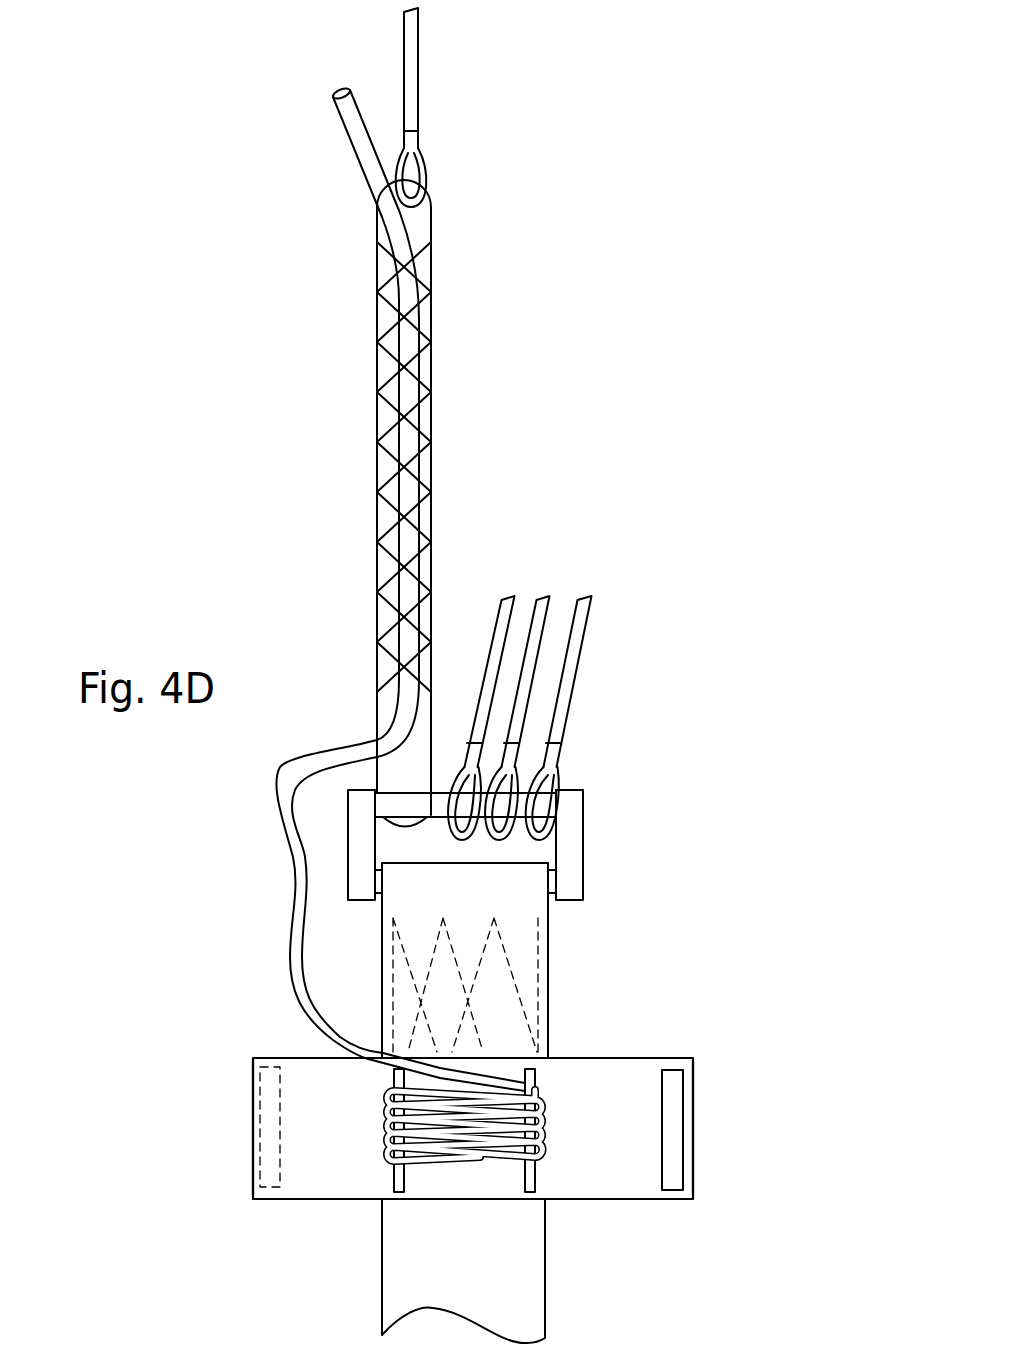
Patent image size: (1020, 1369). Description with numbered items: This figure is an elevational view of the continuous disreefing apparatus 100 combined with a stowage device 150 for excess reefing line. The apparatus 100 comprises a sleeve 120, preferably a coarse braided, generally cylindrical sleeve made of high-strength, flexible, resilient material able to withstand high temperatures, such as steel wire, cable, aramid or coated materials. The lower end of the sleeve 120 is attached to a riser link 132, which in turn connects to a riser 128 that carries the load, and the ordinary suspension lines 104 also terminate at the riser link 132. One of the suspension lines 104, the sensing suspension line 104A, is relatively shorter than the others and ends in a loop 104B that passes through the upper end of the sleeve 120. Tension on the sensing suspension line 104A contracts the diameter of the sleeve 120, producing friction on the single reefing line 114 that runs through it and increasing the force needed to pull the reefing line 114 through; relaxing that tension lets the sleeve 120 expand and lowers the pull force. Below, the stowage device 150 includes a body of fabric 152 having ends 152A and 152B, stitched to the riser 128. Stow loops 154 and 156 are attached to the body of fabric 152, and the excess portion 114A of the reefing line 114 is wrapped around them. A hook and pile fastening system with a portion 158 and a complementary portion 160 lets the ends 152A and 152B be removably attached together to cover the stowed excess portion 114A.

The continuous disreefing apparatus 100 is at (431, 413).
The suspension lines 104 is at (532, 421).
The sensing suspension line 104A is at (418, 92).
The loop 104B is at (427, 165).
The single reefing line 114 is at (350, 152).
The excess portion of reefing line 114A is at (473, 1141).
The sleeve 120 is at (377, 500).
The riser 128 is at (546, 965).
The riser link 132 is at (583, 827).
The stowage device 150 is at (457, 1126).
The body of fabric 152 is at (457, 1126).
The first end of body of fabric 152A is at (253, 1172).
The second end of body of fabric 152B is at (695, 1155).
The stow loop 154 is at (400, 1175).
The stow loop 156 is at (530, 1173).
The hook and pile fastener portion 158 is at (268, 1122).
The complementary hook and pile fastener portion 160 is at (673, 1118).